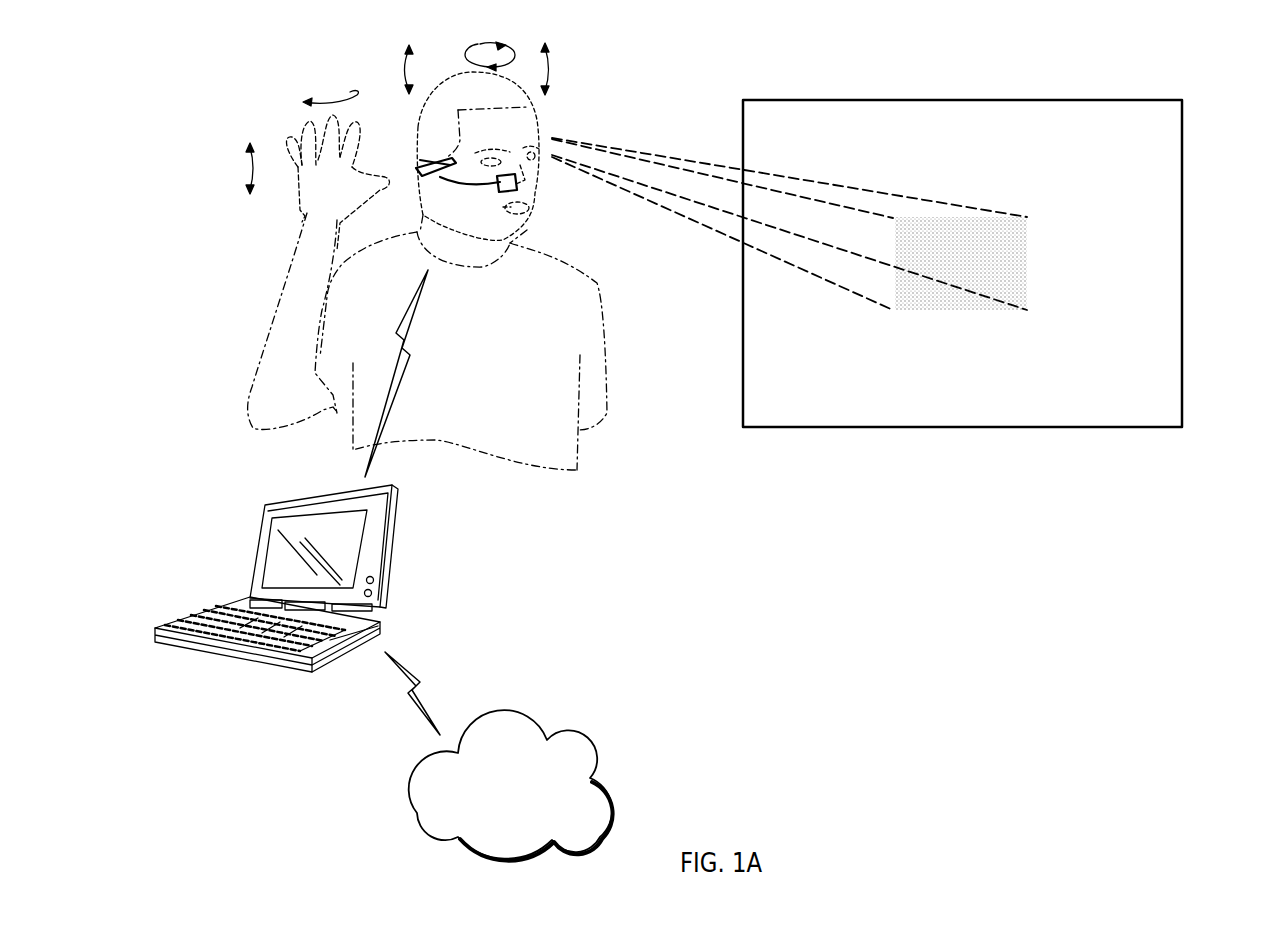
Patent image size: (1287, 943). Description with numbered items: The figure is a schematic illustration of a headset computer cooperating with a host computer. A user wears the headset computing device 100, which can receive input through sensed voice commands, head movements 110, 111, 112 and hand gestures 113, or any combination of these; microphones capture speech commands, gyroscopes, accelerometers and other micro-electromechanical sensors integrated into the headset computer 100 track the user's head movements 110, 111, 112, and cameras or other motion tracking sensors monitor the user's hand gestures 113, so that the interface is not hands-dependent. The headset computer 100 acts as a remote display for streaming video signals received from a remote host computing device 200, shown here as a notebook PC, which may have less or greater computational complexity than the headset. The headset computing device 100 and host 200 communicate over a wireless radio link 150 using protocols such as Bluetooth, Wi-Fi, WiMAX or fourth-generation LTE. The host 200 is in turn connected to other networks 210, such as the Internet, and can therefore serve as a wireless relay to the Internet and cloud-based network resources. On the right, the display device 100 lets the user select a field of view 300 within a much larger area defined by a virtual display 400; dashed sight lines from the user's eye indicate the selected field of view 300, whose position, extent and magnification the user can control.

The headset computer 100 is at (453, 187).
The head movement 110 is at (465, 53).
The head movement 111 is at (550, 70).
The head movement 112 is at (405, 70).
The hand gesture 113 is at (246, 168).
The wireless radio link 150 is at (387, 400).
The host computing device 200 is at (392, 545).
The other networks 210 is at (592, 765).
The field of view 300 is at (1030, 262).
The virtual display 400 is at (842, 427).